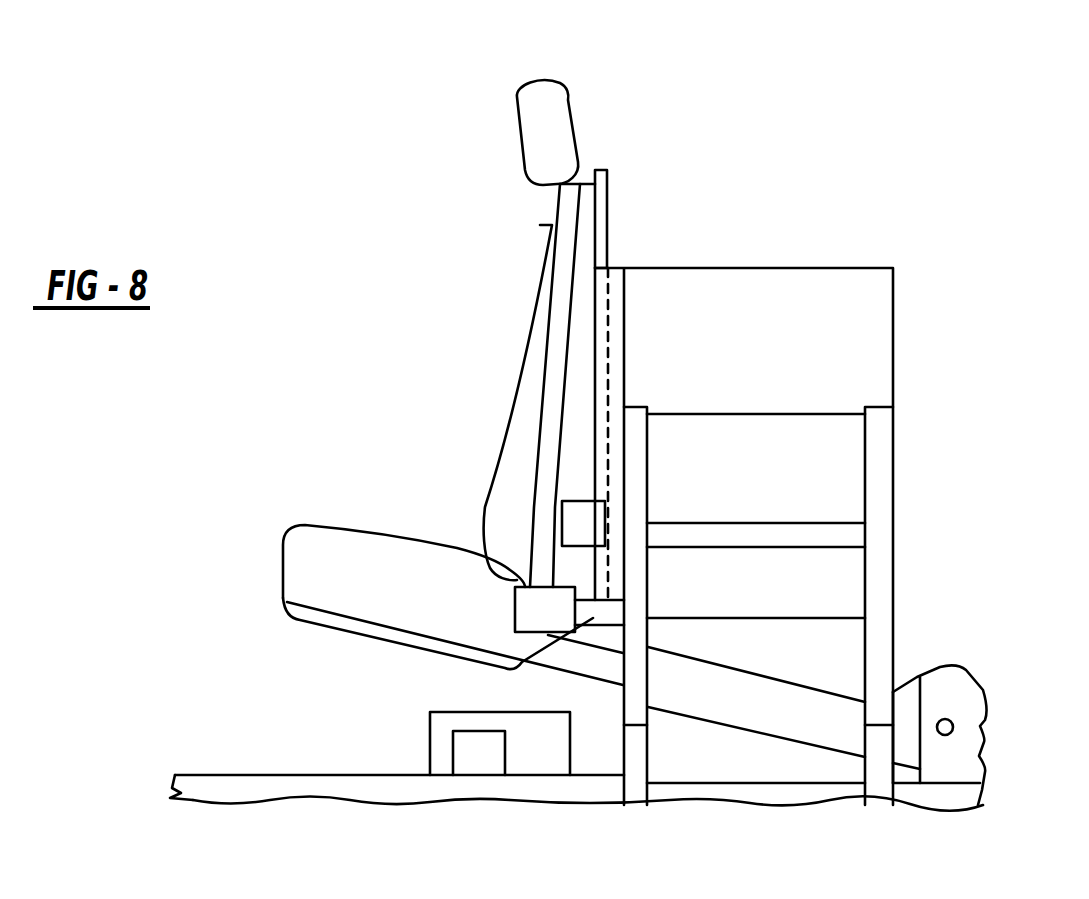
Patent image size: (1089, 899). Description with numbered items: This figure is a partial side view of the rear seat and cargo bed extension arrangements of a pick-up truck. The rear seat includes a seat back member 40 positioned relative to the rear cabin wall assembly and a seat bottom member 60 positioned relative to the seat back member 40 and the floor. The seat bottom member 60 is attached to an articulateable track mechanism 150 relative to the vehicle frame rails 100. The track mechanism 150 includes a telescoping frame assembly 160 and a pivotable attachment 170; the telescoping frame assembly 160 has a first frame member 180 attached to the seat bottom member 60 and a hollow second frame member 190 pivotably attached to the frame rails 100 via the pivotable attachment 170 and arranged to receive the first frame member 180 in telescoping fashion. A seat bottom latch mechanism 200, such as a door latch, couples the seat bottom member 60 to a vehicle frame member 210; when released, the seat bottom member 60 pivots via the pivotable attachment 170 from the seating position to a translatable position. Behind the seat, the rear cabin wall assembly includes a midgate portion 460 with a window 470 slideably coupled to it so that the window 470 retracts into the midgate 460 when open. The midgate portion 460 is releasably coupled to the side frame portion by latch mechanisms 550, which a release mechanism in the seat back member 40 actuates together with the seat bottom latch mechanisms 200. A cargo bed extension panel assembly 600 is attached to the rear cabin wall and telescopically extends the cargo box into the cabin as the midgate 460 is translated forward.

The seat back member 40 is at (527, 358).
The seat bottom member 60 is at (380, 582).
The frame rails 100 is at (248, 785).
The articulateable track mechanism 150 is at (700, 724).
The telescoping frame assembly 160 is at (835, 720).
The pivotable attachment 170 is at (967, 757).
The first frame member 180 is at (600, 663).
The second frame member 190 is at (763, 727).
The seat bottom latch mechanism 200 is at (515, 605).
The vehicle frame member 210 is at (580, 638).
The midgate portion 460 is at (598, 167).
The window 470 is at (603, 287).
The latch mechanism 550 is at (565, 512).
The cargo bed extension panel assembly 600 is at (797, 345).